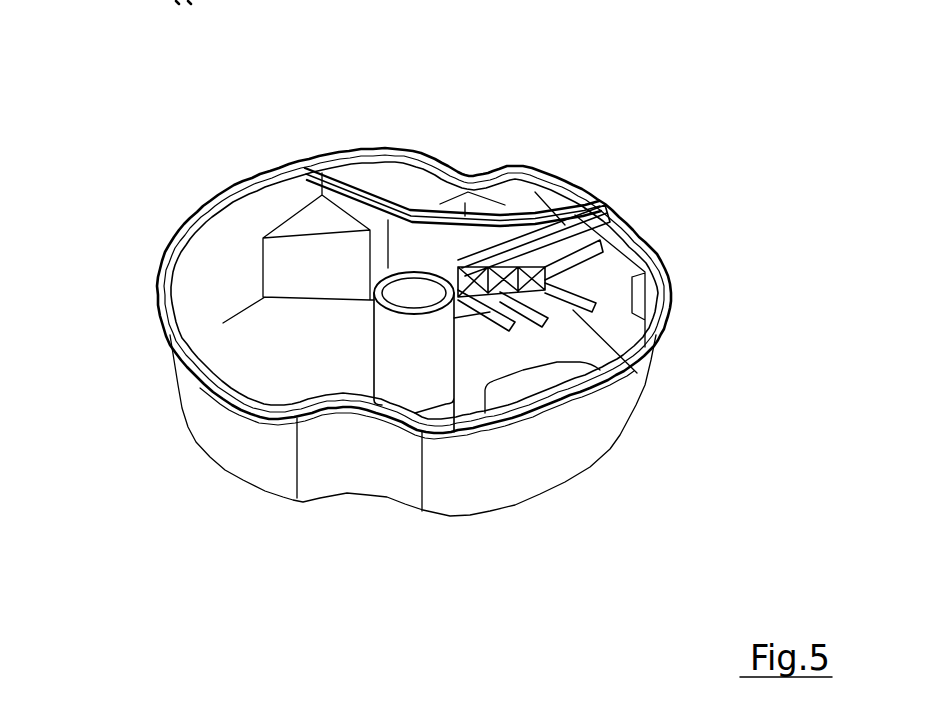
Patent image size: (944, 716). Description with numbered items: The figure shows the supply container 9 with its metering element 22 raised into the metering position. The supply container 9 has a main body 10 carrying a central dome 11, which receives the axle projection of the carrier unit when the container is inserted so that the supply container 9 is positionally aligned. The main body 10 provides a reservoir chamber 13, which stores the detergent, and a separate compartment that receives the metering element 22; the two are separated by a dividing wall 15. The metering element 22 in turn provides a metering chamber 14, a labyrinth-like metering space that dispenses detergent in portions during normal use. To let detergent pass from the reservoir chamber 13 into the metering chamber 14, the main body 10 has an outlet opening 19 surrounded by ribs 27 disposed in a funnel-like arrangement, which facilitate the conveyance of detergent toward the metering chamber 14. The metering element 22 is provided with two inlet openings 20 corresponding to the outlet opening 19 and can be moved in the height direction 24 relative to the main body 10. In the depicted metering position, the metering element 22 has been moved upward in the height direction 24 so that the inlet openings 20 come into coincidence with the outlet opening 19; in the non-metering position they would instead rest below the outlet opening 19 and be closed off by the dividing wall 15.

The supply container 9 is at (690, 284).
The main body 10 is at (233, 453).
The dome 11 is at (420, 355).
The reservoir chamber 13 is at (242, 333).
The metering chamber 14 is at (393, 196).
The dividing wall 15 is at (430, 248).
The outlet opening 19 is at (530, 273).
The inlet openings 20 is at (523, 300).
The metering element 22 is at (523, 202).
The height direction 24 is at (78, 196).
The ribs 27 is at (548, 255).